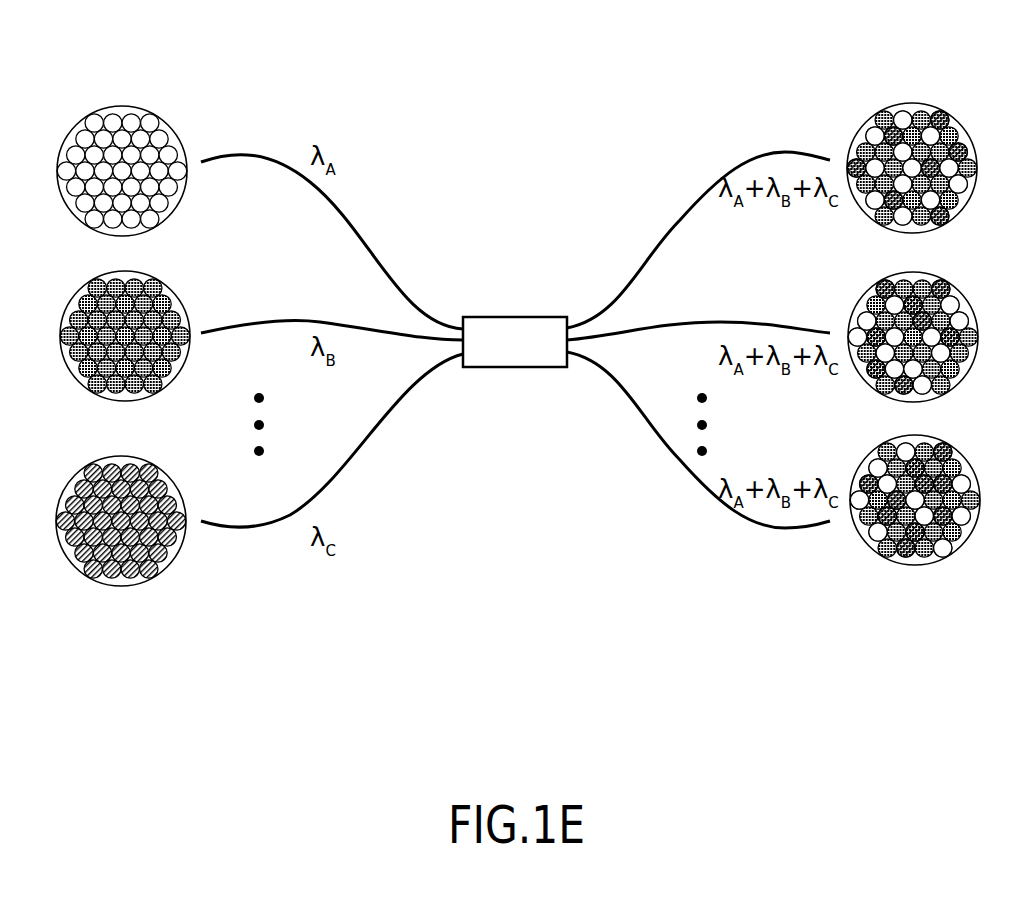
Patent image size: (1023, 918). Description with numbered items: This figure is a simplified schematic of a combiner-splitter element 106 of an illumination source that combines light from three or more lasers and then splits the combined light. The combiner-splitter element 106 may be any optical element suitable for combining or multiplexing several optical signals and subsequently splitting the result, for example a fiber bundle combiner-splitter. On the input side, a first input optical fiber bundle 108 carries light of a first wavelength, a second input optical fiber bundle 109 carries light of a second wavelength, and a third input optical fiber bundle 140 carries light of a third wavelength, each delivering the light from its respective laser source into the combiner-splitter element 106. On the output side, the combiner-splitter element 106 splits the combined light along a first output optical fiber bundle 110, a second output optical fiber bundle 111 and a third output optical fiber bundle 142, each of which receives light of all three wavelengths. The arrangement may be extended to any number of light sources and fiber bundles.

The combiner-splitter element 106 is at (507, 316).
The first input optical fiber bundle 108 is at (122, 105).
The second input optical fiber bundle 109 is at (125, 271).
The third input optical fiber bundle 140 is at (122, 587).
The first output optical fiber bundle 110 is at (908, 103).
The second output optical fiber bundle 111 is at (912, 272).
The third output optical fiber bundle 142 is at (913, 566).